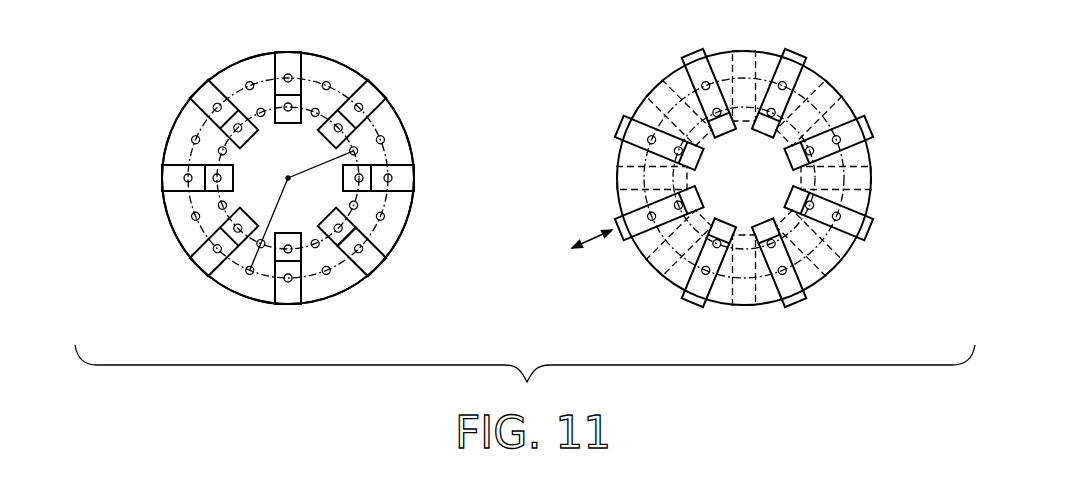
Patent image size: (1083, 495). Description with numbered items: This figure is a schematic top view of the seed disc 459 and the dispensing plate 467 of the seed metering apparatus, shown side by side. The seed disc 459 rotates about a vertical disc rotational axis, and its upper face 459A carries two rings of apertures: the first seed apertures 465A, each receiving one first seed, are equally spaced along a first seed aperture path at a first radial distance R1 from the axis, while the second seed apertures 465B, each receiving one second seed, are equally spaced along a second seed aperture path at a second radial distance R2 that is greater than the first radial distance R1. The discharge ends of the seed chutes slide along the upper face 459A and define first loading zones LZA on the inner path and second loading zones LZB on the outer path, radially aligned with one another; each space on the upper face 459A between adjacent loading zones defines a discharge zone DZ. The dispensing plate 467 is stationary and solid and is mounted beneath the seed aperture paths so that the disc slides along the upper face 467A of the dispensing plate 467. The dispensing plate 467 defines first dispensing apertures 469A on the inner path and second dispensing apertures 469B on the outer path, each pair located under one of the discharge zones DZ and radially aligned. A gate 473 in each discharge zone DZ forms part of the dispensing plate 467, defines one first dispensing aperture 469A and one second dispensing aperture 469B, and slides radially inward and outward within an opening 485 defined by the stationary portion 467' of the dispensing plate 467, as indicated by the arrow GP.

The seed disc 459 is at (335, 58).
The upper face of the seed disc 459A is at (228, 77).
The first seed apertures 465A is at (221, 151).
The second seed apertures 465B is at (196, 140).
The first radial distance R1 is at (312, 167).
The second radial distance R2 is at (268, 206).
The discharge zone DZ is at (218, 222).
The first loading zones LZA is at (350, 225).
The second loading zones LZB is at (370, 260).
The dispensing plate 467 is at (808, 78).
The stationary portion of the dispensing plate 467' is at (717, 178).
The upper face of the dispensing plate 467A is at (842, 242).
The first dispensing apertures 469A is at (858, 113).
The second dispensing apertures 469B is at (868, 143).
The gate 473 is at (697, 52).
The opening 485 is at (688, 186).
The gate path arrow GP is at (593, 243).